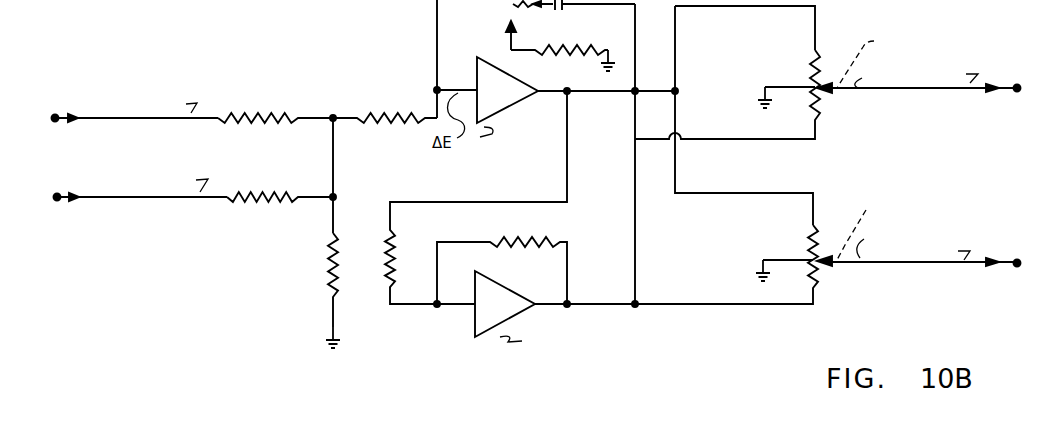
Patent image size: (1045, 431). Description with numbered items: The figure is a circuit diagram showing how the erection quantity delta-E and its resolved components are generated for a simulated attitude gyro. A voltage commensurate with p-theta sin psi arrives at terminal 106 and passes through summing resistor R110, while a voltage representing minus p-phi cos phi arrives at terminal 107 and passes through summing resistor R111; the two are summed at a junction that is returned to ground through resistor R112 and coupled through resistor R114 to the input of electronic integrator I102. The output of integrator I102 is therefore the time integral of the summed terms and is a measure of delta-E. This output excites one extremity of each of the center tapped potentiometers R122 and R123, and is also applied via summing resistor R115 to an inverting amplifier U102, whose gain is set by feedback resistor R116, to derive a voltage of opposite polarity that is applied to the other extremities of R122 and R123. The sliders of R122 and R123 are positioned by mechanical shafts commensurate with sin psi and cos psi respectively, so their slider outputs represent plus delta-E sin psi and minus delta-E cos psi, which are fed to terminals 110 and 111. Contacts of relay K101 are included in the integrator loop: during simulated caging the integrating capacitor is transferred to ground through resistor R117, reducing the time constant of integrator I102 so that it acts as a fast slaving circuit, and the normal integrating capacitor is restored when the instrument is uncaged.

The terminal 106 is at (40, 111).
The terminal 107 is at (40, 195).
The terminal 110 is at (1022, 84).
The terminal 111 is at (1018, 256).
The summing resistor R110 is at (284, 105).
The summing resistor R111 is at (284, 186).
The resistor R112 is at (326, 268).
The resistor R114 is at (408, 110).
The summing resistor R115 is at (392, 258).
The feedback resistor R116 is at (489, 240).
The resistor R117 is at (590, 44).
The center tapped potentiometer R122 is at (825, 101).
The center tapped potentiometer R123 is at (825, 274).
The electronic integrator I102 is at (492, 117).
The amplifier U102 is at (510, 322).
The relay K101 is at (555, 7).